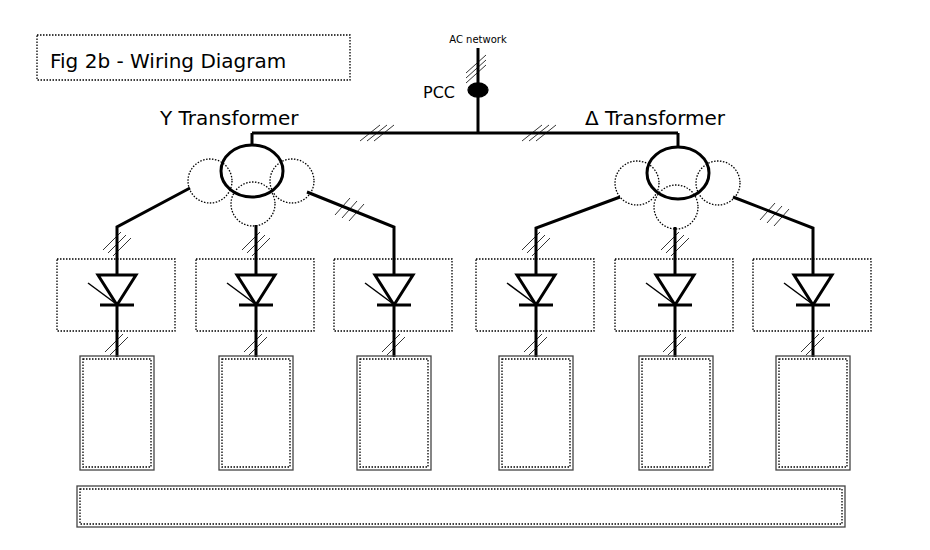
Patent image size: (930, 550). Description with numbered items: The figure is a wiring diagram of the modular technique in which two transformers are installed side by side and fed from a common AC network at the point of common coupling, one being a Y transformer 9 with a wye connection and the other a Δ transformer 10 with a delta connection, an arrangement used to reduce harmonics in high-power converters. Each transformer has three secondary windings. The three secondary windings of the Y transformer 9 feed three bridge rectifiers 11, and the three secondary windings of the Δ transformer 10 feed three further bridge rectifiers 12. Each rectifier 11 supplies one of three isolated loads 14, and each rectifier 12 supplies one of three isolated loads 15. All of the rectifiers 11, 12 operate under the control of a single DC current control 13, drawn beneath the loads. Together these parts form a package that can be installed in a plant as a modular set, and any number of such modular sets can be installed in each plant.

The Y transformer 9 is at (233, 179).
The Δ transformer 10 is at (701, 181).
The bridge rectifier 11 is at (250, 289).
The bridge rectifier 12 is at (673, 289).
The DC current control 13 is at (482, 506).
The load 14 is at (230, 413).
The load 15 is at (695, 413).